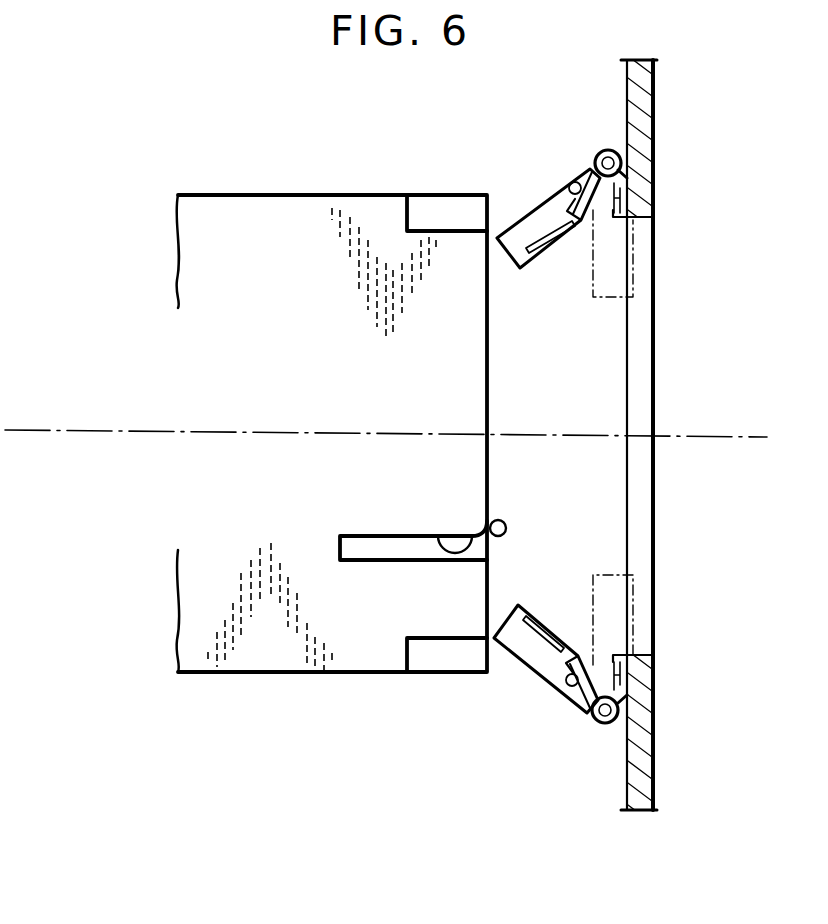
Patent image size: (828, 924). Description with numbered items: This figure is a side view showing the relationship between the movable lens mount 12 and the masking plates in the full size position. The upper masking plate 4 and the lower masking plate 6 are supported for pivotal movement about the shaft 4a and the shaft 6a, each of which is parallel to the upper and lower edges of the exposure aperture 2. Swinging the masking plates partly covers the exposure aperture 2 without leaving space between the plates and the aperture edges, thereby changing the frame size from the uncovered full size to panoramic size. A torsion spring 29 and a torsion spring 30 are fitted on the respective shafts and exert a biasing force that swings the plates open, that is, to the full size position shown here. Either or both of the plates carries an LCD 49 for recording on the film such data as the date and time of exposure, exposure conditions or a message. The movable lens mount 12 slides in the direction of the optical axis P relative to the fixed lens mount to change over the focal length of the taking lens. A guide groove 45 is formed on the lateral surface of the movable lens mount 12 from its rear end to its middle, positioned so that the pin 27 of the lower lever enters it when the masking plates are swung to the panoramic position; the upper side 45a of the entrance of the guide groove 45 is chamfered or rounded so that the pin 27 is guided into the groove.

The exposure aperture 2 is at (646, 372).
The upper masking plate 4 is at (525, 228).
The shaft 4a is at (608, 152).
The lower masking plate 6 is at (518, 660).
The shaft 6a is at (606, 725).
The movable lens mount 12 is at (274, 210).
The pin 27 is at (508, 525).
The torsion spring 29 is at (582, 175).
The torsion spring 30 is at (575, 702).
The guide groove 45 is at (363, 537).
The upper side of the entrance of the guide groove 45a is at (438, 540).
The LCD 49 is at (552, 247).
The optical axis P is at (68, 430).